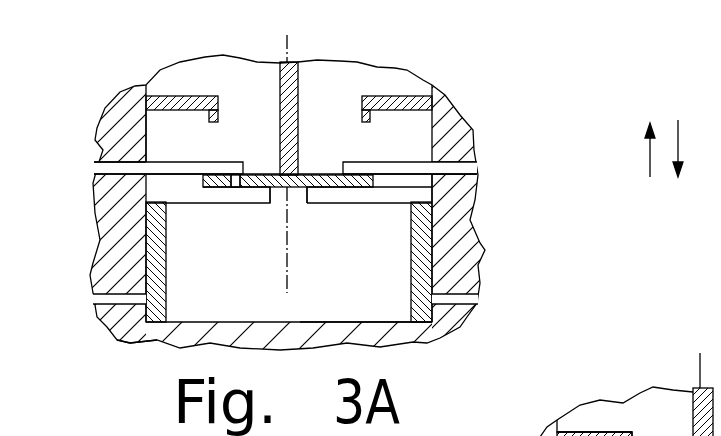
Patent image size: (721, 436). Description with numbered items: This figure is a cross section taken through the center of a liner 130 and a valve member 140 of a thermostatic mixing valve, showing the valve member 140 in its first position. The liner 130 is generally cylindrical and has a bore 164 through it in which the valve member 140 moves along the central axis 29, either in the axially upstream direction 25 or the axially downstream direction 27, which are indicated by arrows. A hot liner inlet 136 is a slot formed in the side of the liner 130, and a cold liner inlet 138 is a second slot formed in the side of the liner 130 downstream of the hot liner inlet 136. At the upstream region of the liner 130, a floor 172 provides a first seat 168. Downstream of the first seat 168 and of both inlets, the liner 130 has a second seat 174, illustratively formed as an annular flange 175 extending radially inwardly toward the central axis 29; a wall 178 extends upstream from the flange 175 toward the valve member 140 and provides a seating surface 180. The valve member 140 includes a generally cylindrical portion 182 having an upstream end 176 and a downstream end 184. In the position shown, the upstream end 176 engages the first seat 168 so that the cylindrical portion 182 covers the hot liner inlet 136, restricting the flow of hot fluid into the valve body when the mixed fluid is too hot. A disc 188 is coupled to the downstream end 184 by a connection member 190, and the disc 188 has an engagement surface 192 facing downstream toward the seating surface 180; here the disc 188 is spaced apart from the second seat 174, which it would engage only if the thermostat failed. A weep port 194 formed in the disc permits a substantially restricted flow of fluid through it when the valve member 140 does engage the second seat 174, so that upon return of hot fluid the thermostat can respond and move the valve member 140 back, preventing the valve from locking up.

In FIG. 3A, the axially upstream direction 25 is at (678, 140).
In FIG. 3A, the axially downstream direction 27 is at (650, 158).
In FIG. 3A, the central axis 29 is at (298, 274).
In FIG. 3A, the liner 130 is at (471, 279).
In FIG. 3A, the hot liner inlet 136 is at (97, 300).
In FIG. 3A, the cold liner inlet 138 is at (97, 170).
In FIG. 3A, the valve member 140 is at (404, 193).
In FIG. 3A, the bore 164 is at (169, 128).
In FIG. 3B, the bore 164 is at (673, 435).
In FIG. 3A, the first seat 168 is at (143, 343).
In FIG. 3A, the floor 172 is at (415, 338).
In FIG. 3A, the second seat 174 is at (386, 95).
In FIG. 3A, the annular flange 175 is at (187, 95).
In FIG. 3B, the annular flange 175 is at (612, 432).
In FIG. 3A, the upstream end 176 is at (478, 322).
In FIG. 3A, the wall 178 is at (219, 112).
In FIG. 3A, the seating surface 180 is at (364, 122).
In FIG. 3A, the cylindrical portion 182 is at (482, 256).
In FIG. 3A, the downstream end 184 is at (480, 216).
In FIG. 3A, the disc 188 is at (318, 175).
In FIG. 3A, the connection member 190 is at (297, 197).
In FIG. 3A, the engagement surface 192 is at (216, 172).
In FIG. 3A, the weep port 194 is at (236, 183).